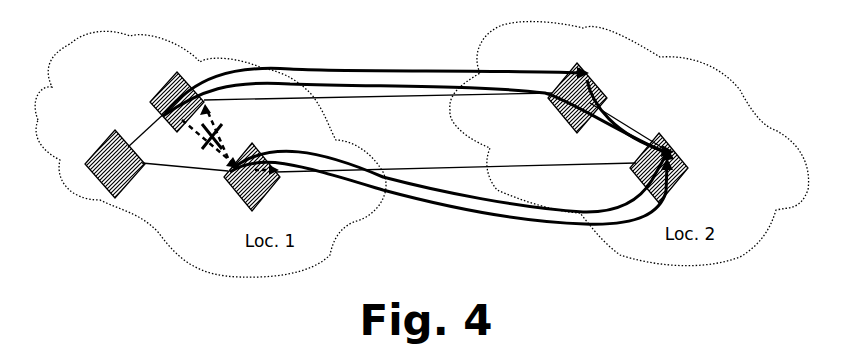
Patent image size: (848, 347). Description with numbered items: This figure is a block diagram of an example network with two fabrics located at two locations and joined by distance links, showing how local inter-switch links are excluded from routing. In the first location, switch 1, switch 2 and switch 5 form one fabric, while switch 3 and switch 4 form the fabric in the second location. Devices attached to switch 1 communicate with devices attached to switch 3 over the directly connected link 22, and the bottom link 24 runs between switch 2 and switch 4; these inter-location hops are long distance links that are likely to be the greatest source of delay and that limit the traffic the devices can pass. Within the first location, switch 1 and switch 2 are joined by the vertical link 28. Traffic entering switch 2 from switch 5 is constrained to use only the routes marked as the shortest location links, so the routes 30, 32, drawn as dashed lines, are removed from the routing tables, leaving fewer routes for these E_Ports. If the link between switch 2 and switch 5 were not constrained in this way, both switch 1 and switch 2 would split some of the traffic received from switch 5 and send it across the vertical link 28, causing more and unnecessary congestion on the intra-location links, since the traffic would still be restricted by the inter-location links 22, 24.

The switch 1 is at (177, 102).
The switch 2 is at (252, 177).
The switch 3 is at (577, 98).
The switch 4 is at (659, 168).
The switch 5 is at (115, 164).
The link 22 is at (410, 97).
The bottom link 24 is at (424, 169).
The vertical link 28 is at (228, 138).
The route 30 is at (214, 120).
The route 32 is at (203, 143).